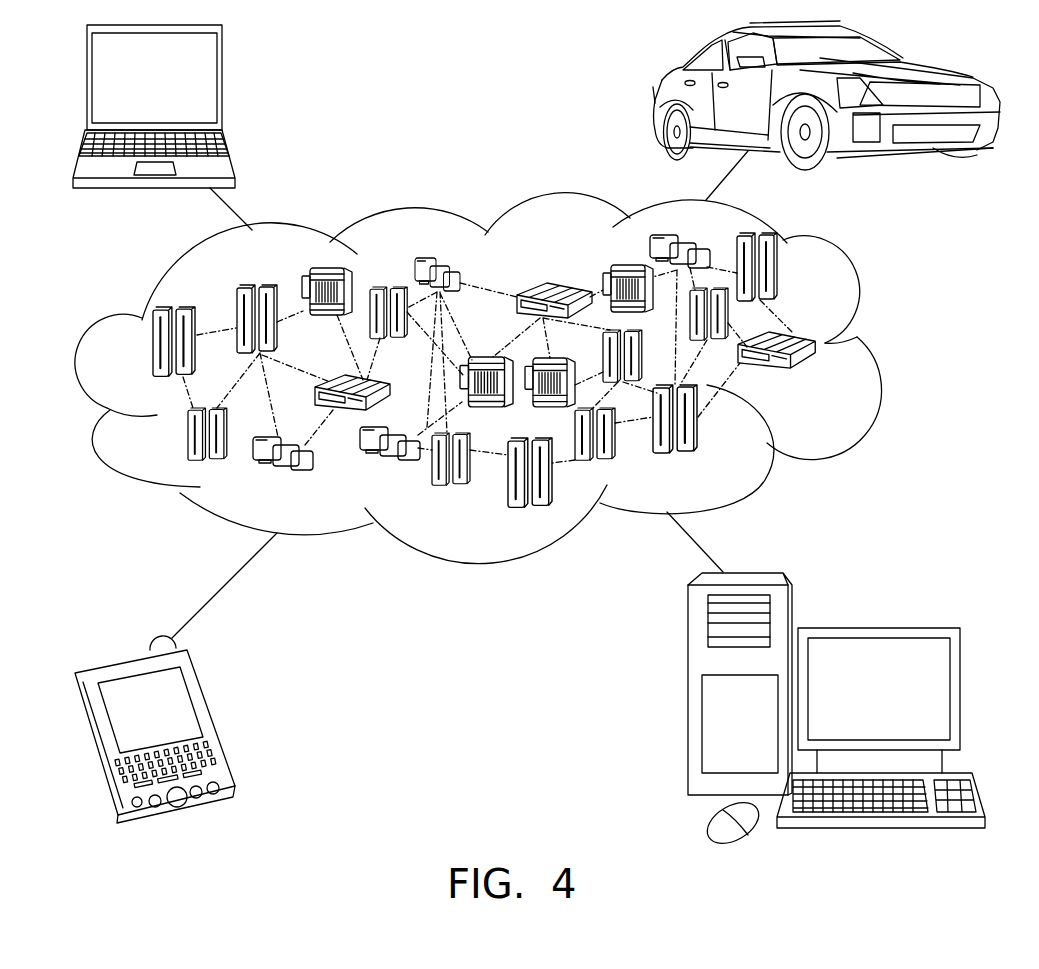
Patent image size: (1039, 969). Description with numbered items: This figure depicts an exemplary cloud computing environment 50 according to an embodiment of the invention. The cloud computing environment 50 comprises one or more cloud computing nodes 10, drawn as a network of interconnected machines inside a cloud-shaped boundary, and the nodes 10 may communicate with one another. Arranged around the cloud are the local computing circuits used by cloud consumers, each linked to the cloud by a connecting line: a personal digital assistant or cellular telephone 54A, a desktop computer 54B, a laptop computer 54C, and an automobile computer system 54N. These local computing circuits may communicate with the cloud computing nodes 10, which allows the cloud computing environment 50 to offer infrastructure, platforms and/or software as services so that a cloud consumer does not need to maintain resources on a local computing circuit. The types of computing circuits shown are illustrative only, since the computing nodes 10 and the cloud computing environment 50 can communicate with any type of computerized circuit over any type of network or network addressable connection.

The cloud computing environment 50 is at (875, 350).
The cloud computing node 10 is at (818, 377).
The personal digital assistant (PDA) or cellular telephone 54A is at (213, 720).
The desktop computer 54B is at (875, 627).
The laptop computer 54C is at (223, 87).
The automobile computer system 54N is at (658, 100).